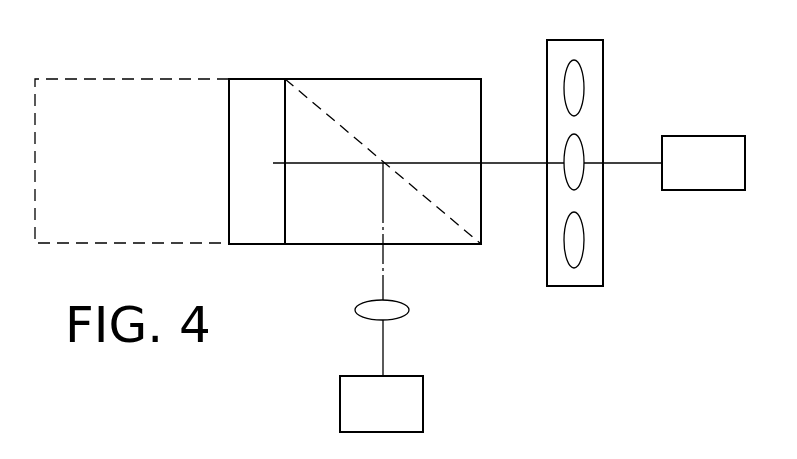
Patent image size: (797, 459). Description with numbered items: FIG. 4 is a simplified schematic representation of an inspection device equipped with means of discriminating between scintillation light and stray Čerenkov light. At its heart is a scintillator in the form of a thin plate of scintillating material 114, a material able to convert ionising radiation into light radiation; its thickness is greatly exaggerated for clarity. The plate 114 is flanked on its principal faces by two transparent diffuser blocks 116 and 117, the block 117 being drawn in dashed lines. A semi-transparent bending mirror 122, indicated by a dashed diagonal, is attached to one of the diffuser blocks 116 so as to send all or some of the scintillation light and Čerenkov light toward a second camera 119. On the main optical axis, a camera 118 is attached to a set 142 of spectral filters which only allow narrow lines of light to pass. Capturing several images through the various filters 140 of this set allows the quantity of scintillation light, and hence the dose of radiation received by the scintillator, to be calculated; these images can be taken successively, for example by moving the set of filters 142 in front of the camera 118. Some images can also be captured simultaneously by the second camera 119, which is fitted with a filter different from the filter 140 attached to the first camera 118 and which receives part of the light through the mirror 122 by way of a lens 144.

The transparent diffuser block 117 is at (130, 91).
The thin plate of scintillating material 114 is at (252, 92).
The transparent diffuser block 116 is at (433, 98).
The semi-transparent bending mirror 122 is at (315, 88).
The set of spectral filters 142 is at (590, 52).
The spectral filter 140 is at (580, 174).
The camera 118 is at (698, 142).
The lens 144 is at (405, 310).
The second camera 119 is at (413, 409).